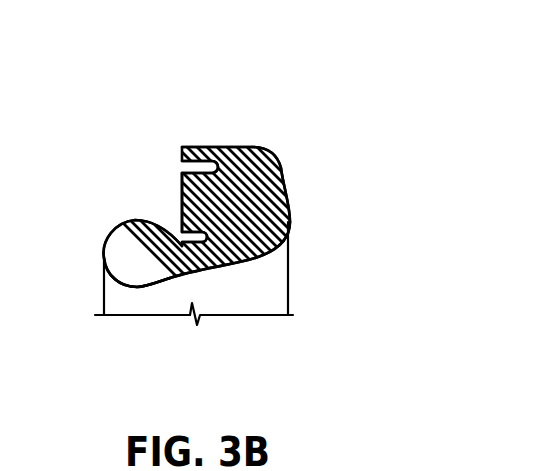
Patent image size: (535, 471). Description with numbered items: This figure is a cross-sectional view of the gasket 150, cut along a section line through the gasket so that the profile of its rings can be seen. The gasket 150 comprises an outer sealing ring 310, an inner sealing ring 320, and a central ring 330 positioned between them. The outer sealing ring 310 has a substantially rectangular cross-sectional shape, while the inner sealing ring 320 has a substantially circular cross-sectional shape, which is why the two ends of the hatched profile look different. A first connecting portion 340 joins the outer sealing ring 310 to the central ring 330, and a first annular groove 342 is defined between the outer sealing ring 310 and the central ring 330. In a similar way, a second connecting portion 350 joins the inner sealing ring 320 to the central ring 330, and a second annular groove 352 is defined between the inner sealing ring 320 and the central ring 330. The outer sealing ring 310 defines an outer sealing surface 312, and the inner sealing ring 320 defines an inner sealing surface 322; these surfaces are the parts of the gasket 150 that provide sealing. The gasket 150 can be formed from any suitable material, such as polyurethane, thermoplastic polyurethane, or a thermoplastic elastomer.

The gasket 150 is at (283, 103).
The outer sealing ring 310 is at (212, 147).
The outer sealing surface 312 is at (193, 145).
The inner sealing ring 320 is at (122, 236).
The inner sealing surface 322 is at (137, 288).
The central ring 330 is at (181, 192).
The first connecting portion 340 is at (277, 167).
The first annular groove 342 is at (181, 167).
The second connecting portion 350 is at (280, 234).
The second annular groove 352 is at (181, 237).